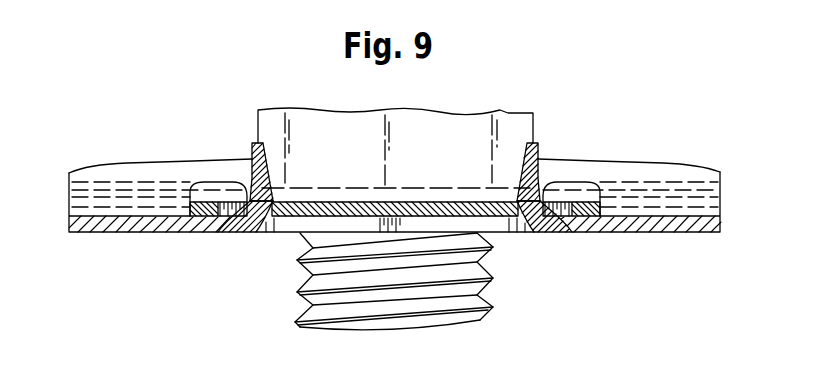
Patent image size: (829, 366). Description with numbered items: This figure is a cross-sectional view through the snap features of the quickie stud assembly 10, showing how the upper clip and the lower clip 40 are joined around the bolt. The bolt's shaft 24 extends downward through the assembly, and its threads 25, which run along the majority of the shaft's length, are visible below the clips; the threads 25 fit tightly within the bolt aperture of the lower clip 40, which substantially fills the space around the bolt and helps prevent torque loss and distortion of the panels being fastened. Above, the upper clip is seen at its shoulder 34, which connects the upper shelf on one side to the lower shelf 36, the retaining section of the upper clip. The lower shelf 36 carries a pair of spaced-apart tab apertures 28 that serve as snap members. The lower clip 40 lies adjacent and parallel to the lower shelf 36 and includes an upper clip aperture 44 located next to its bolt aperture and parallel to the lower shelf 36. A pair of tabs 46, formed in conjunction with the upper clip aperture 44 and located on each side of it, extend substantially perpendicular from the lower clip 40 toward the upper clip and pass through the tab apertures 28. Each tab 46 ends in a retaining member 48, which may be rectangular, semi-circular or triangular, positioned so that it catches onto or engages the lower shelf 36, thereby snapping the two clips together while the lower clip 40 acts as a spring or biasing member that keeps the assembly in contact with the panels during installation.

The quickie stud assembly 10 is at (564, 63).
The shaft 24 is at (295, 300).
The threads 25 is at (493, 308).
The tab aperture 28 is at (247, 203).
The shoulder 34 is at (453, 127).
The lower shelf 36 is at (207, 183).
The lower clip 40 is at (145, 232).
The upper clip aperture 44 is at (503, 233).
The tab 46 is at (249, 142).
The retaining member 48 is at (275, 200).